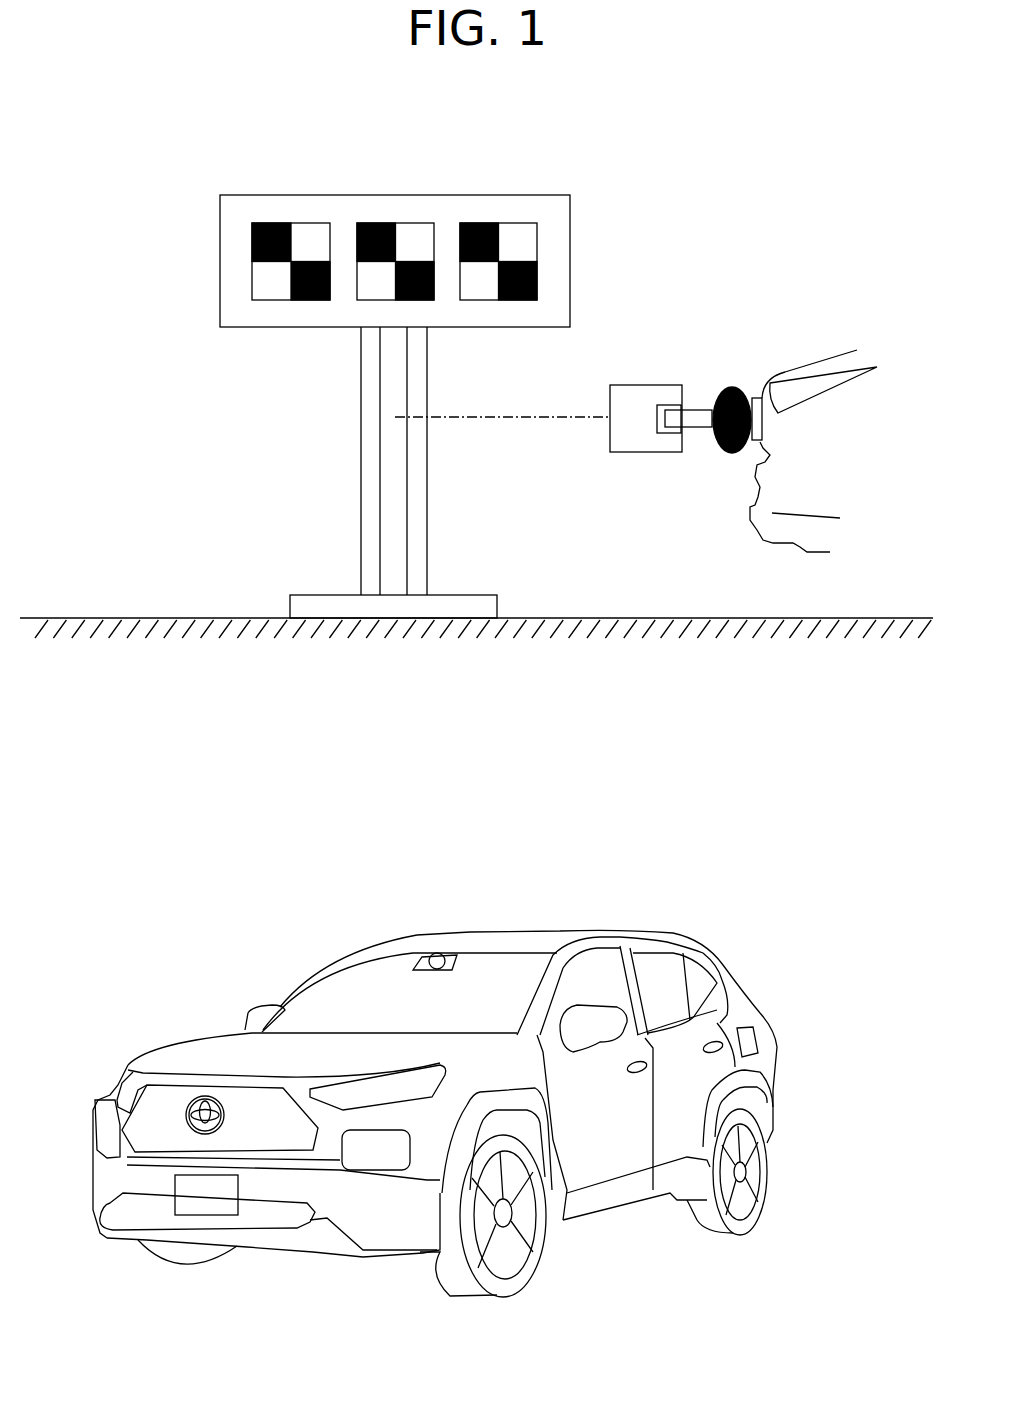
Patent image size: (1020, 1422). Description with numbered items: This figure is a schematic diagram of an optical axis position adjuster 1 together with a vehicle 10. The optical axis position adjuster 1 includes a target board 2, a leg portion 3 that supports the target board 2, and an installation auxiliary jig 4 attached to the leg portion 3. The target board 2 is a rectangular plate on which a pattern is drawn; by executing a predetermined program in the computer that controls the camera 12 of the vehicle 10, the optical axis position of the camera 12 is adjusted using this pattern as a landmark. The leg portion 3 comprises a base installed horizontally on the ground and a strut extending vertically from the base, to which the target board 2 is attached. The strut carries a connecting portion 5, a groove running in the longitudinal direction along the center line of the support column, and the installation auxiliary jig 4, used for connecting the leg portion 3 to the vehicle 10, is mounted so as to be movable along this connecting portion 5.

The optical axis position adjuster 1 is at (396, 367).
The target board 2 is at (556, 245).
The leg portion 3 is at (302, 610).
The installation auxiliary jig 4 is at (650, 447).
The connecting portion 5 is at (389, 465).
The vehicle 10 is at (826, 332).
The camera 12 is at (448, 953).